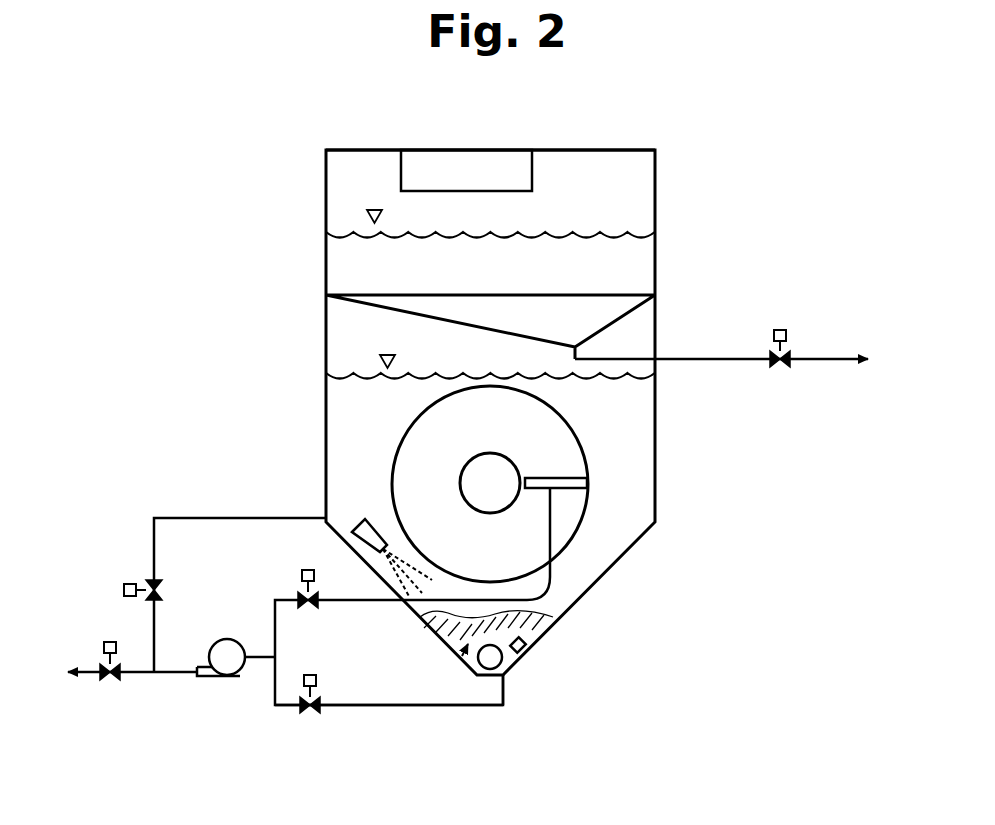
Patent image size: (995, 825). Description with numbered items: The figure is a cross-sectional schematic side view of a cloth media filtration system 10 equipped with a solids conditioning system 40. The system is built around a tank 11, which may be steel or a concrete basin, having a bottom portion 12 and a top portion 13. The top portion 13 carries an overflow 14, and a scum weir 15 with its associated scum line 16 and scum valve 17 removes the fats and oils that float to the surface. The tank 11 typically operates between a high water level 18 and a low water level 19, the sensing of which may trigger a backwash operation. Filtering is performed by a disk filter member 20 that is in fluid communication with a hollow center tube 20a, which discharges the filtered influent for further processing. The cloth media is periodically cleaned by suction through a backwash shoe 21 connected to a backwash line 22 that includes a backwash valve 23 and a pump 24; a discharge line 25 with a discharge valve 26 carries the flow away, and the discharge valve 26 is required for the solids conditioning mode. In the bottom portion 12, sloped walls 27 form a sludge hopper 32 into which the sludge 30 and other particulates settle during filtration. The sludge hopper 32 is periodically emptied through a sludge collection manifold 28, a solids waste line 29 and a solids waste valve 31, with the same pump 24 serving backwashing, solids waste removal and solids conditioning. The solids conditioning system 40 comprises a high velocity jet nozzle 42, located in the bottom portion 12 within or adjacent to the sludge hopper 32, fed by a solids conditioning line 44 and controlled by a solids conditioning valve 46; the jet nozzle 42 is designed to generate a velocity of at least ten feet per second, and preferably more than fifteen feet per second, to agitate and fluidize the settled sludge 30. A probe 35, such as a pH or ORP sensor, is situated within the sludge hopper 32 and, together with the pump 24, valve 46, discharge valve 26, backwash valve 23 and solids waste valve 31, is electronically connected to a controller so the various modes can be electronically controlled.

The cloth media filtration system 10 is at (543, 386).
The tank 11 is at (662, 200).
The bottom portion 12 is at (506, 676).
The top portion 13 is at (326, 150).
The overflow 14 is at (532, 161).
The scum weir 15 is at (623, 294).
The scum line 16 is at (705, 360).
The scum valve 17 is at (784, 329).
The high water level 18 is at (354, 237).
The low water level 19 is at (356, 367).
The disk filter member 20 is at (572, 508).
The hollow center tube 20a is at (467, 460).
The backwash shoe 21 is at (577, 483).
The backwash line 22 is at (547, 592).
The backwash valve 23 is at (302, 575).
The pump 24 is at (213, 678).
The discharge line 25 is at (140, 674).
The discharge valve 26 is at (112, 679).
The sloped walls 27 is at (353, 532).
The sludge collection manifold 28 is at (497, 658).
The solids waste line 29 is at (446, 706).
The sludge 30 is at (462, 656).
The solids waste valve 31 is at (312, 712).
The sludge hopper 32 is at (428, 639).
The probe 35 is at (524, 646).
The solids conditioning system 40 is at (352, 544).
The high velocity jet nozzle 42 is at (429, 536).
The solids conditioning line 44 is at (183, 518).
The solids conditioning valve 46 is at (125, 590).